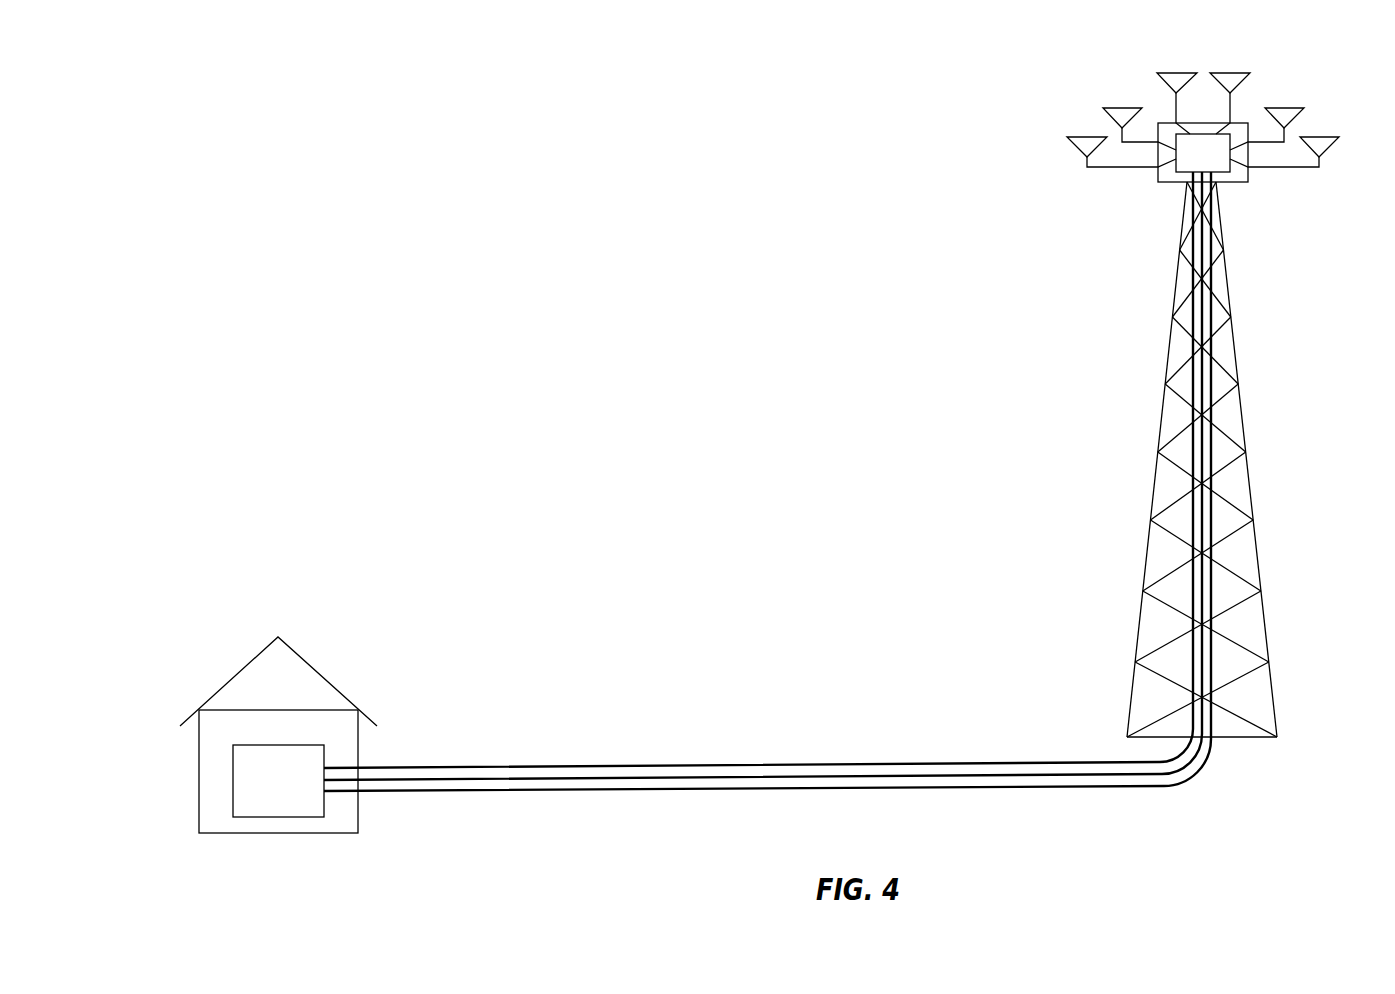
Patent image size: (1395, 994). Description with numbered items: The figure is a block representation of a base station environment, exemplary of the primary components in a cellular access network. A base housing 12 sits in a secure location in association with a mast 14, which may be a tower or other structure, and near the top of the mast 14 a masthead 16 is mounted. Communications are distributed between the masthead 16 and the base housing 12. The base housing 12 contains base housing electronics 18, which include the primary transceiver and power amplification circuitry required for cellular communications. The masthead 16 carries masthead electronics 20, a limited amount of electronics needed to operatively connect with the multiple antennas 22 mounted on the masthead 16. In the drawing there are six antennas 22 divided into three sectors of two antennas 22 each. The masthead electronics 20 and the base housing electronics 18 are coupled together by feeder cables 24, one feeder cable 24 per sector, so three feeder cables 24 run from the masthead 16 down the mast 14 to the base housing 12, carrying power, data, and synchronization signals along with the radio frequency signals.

The base housing 12 is at (307, 661).
The mast 14 is at (1239, 384).
The masthead 16 is at (1236, 182).
The base housing electronics 18 is at (266, 793).
The masthead electronics 20 is at (1190, 165).
The antennas 22 is at (1158, 73).
The feeder cables 24 is at (960, 763).